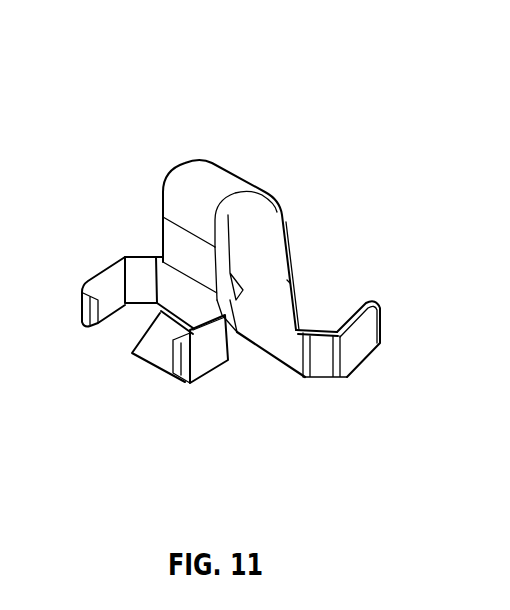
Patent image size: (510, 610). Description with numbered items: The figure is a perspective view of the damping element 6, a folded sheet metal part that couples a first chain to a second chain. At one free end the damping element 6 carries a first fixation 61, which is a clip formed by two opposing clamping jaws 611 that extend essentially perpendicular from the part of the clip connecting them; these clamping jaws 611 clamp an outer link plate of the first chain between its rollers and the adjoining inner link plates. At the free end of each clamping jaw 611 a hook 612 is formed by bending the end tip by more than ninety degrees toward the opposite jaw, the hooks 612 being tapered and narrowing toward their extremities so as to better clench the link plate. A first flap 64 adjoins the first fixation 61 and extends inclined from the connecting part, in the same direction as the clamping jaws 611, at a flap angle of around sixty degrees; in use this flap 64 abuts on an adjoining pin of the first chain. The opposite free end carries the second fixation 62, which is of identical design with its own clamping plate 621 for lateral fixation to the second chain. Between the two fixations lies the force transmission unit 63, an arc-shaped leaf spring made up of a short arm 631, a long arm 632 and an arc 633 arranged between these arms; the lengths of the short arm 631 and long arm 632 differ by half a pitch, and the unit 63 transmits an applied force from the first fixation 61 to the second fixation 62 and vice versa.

The damping element 6 is at (145, 93).
The first fixation 61 is at (92, 391).
The clamping jaws 611 is at (110, 283).
The hooks 612 is at (95, 321).
The second fixation 62 is at (325, 292).
The clamping plate 621 is at (362, 346).
The force transmission unit 63 is at (268, 170).
The short arm 631 is at (183, 250).
The long arm 632 is at (258, 247).
The arc 633 is at (200, 183).
The first flap 64 is at (152, 357).